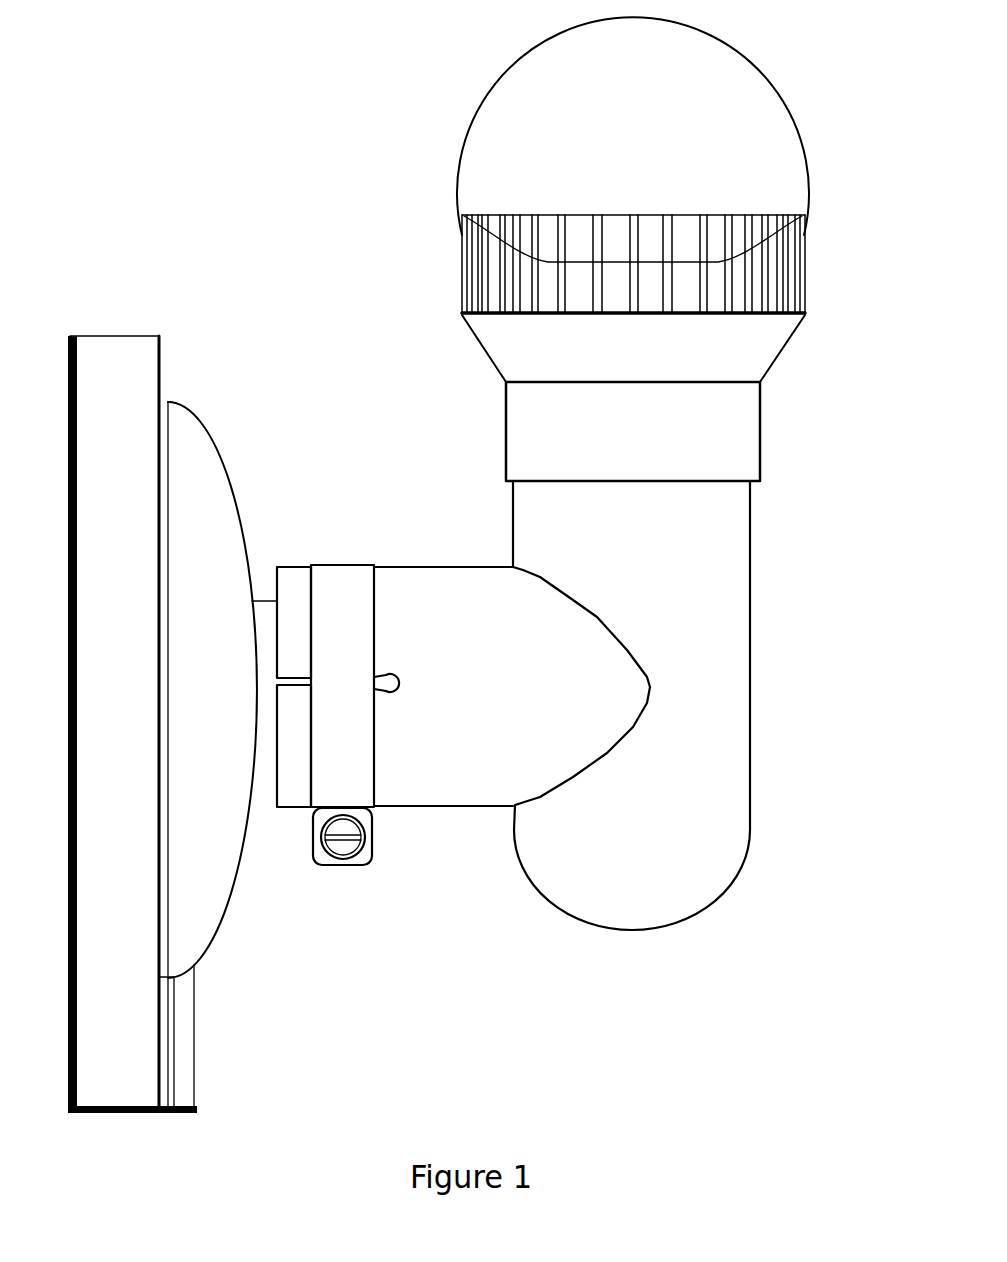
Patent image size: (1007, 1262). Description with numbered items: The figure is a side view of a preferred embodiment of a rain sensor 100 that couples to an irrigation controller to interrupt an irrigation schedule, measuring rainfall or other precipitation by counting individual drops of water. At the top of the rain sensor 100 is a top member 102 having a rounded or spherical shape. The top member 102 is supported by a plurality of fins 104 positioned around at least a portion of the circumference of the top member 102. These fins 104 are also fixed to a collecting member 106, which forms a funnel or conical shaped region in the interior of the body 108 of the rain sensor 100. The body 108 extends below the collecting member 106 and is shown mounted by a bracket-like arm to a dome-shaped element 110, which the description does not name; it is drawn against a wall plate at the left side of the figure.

The rain sensor 100 is at (438, 565).
The top member 102 is at (486, 101).
The fins 104 is at (462, 245).
The collecting member 106 is at (507, 363).
The body 108 is at (520, 516).
The mounting base dome 110 is at (234, 874).